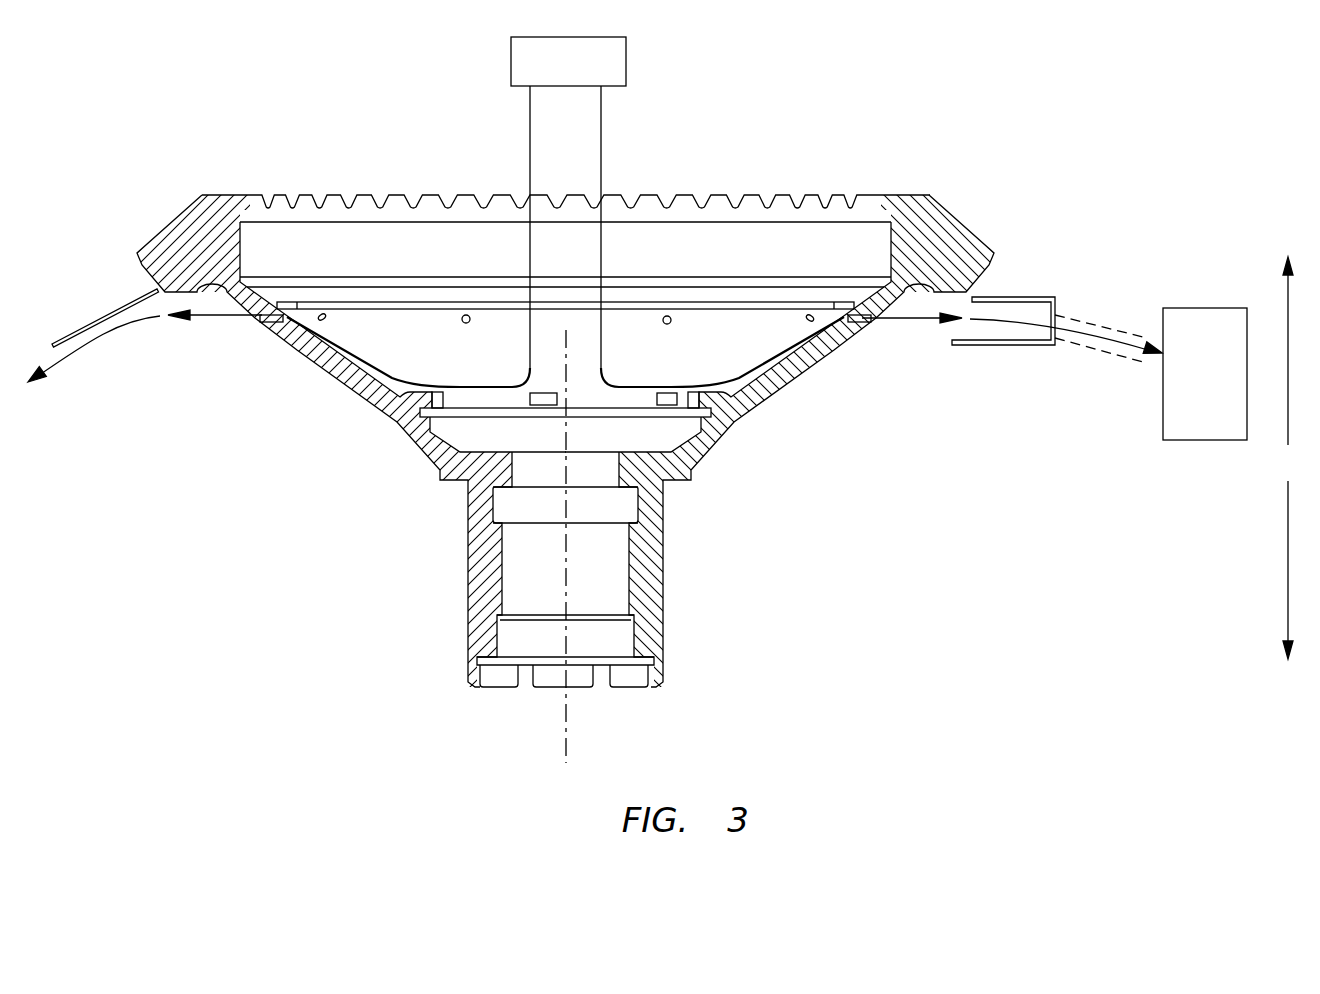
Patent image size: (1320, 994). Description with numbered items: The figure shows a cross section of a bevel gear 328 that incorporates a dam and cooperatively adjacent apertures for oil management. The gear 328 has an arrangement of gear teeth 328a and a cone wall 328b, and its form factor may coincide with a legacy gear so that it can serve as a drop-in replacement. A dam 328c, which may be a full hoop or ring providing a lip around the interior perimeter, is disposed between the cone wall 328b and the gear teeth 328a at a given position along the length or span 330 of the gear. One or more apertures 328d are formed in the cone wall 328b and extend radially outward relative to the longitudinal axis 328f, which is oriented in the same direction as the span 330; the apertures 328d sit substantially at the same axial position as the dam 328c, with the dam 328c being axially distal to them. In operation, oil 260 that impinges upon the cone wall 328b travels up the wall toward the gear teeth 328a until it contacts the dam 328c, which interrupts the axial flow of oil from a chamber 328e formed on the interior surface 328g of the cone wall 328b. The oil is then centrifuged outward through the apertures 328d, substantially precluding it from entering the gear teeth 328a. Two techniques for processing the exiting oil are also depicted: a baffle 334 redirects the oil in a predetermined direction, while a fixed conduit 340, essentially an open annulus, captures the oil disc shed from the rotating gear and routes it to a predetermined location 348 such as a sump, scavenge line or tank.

The oil 260 is at (591, 71).
The bevel gear 328 is at (565, 394).
The gear teeth 328a is at (340, 200).
The cone wall 328b is at (322, 370).
The dam 328c is at (290, 300).
The apertures 328d is at (466, 323).
The chamber 328e is at (372, 340).
The longitudinal axis 328f is at (566, 748).
The interior surface 328g is at (790, 353).
The length/span 330 is at (1287, 458).
The baffle 334 is at (100, 317).
The conduit 340 is at (1025, 297).
The predetermined location 348 is at (1228, 382).